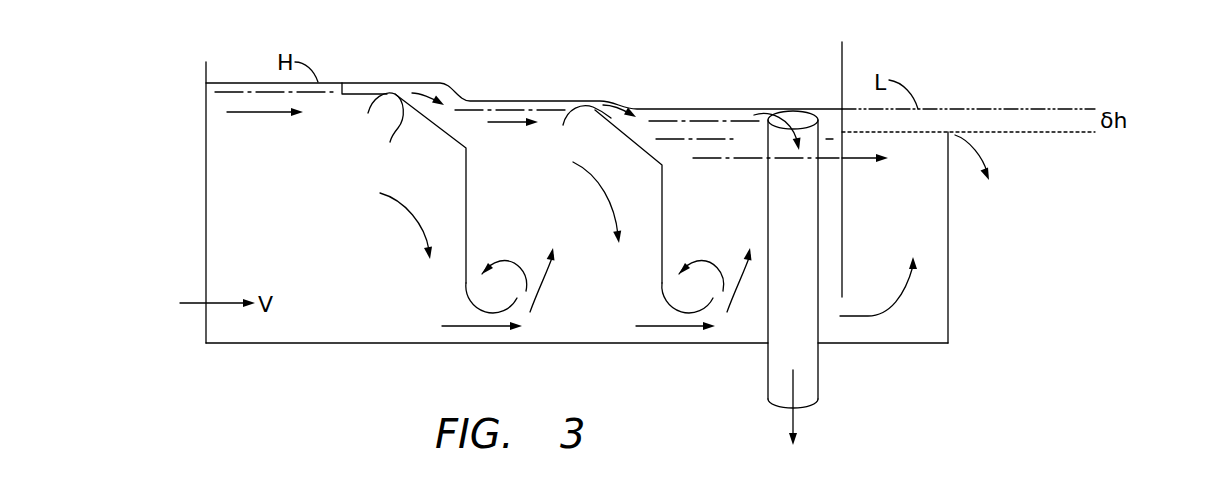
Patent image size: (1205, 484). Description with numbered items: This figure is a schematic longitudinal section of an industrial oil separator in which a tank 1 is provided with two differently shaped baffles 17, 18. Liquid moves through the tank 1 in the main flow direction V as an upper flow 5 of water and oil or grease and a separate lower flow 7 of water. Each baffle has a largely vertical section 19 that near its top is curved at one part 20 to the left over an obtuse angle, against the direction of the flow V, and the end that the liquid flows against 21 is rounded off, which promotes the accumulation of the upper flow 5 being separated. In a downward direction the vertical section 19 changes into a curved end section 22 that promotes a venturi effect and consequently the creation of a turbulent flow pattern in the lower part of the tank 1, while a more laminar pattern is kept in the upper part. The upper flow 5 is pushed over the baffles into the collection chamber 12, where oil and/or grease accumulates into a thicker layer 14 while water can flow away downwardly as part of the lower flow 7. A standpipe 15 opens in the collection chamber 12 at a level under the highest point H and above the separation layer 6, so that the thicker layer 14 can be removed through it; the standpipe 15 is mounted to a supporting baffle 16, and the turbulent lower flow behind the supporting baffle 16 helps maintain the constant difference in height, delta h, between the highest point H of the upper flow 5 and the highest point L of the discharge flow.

The tank 1 is at (304, 220).
The upper flow 5 is at (228, 82).
The separation layer 6 is at (340, 83).
The lower flow 7 is at (240, 193).
The collection chamber 12 is at (735, 207).
The thicker layer 14 is at (681, 138).
The standpipe 15 is at (768, 302).
The supporting baffle 16 is at (841, 83).
The baffle 17 is at (468, 184).
The baffle 18 is at (663, 198).
The vertical section 19 is at (468, 238).
The curved part 20 is at (379, 124).
The rounded end 21 is at (578, 120).
The curved end section 22 is at (511, 302).